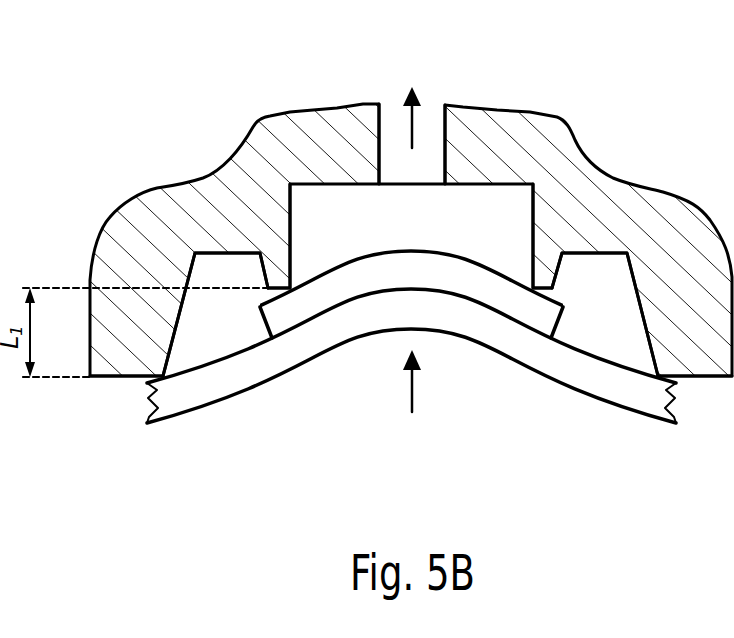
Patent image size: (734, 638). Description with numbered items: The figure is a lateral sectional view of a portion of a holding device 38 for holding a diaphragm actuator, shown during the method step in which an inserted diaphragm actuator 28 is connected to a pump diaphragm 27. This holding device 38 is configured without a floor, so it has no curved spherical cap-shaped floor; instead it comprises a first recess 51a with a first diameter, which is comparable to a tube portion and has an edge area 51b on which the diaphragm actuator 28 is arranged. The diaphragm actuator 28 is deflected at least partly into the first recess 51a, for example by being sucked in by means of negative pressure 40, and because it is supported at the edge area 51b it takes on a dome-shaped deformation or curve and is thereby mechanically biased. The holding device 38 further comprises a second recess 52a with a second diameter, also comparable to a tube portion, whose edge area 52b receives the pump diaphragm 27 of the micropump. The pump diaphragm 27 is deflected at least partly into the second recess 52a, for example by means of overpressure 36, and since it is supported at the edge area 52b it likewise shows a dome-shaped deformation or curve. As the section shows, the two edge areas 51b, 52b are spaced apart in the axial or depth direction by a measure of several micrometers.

The pump diaphragm 27 is at (232, 383).
The diaphragm actuator 28 is at (322, 298).
The overpressure 36 is at (412, 390).
The holding device 38 is at (306, 80).
The negative pressure 40 is at (412, 118).
The first recess 51a is at (432, 216).
The edge area 51b is at (277, 271).
The second recess 52a is at (245, 339).
The edge area 52b is at (125, 377).